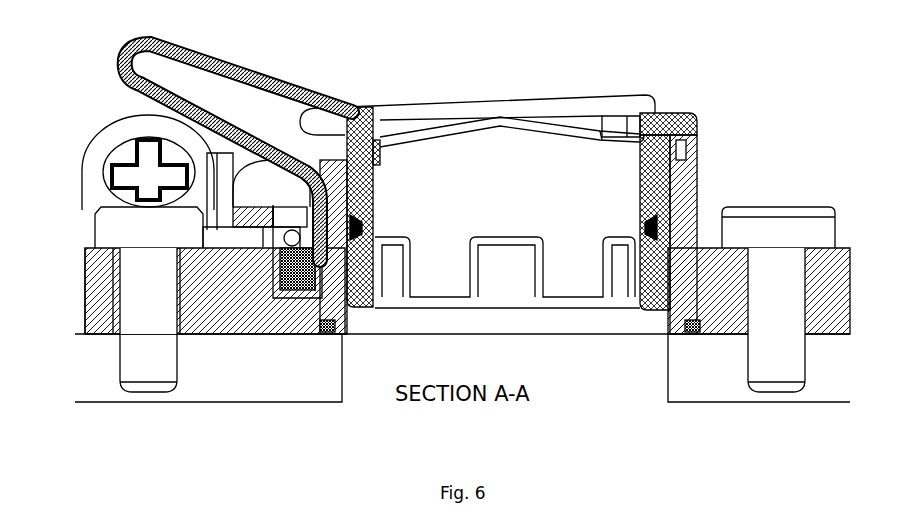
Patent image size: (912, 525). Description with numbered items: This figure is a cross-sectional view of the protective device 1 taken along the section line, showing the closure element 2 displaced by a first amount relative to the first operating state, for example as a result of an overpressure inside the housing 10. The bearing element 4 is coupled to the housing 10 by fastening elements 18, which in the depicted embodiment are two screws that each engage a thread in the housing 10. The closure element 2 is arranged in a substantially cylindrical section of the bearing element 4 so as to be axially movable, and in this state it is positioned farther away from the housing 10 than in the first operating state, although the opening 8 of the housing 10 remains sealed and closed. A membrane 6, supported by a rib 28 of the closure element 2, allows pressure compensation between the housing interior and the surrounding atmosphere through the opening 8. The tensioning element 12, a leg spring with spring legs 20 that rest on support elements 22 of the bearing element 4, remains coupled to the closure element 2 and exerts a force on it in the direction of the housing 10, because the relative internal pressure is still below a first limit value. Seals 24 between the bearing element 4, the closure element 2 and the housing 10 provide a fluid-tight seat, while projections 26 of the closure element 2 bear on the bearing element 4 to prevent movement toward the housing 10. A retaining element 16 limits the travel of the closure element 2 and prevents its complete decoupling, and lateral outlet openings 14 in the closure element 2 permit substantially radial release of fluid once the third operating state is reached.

The protective device 1 is at (803, 74).
The closure element 2 is at (337, 112).
The bearing element 4 is at (700, 185).
The membrane 6 is at (600, 130).
The opening 8 is at (598, 385).
The housing 10 is at (295, 389).
The tensioning element 12 is at (125, 128).
The outlet openings 14 is at (518, 263).
The retaining element 16 is at (165, 58).
The fastening elements 18 is at (103, 232).
The spring legs 20 is at (413, 107).
The support element 22 is at (625, 118).
The seals 24 is at (372, 218).
The projections 26 is at (688, 113).
The rib 28 is at (518, 120).